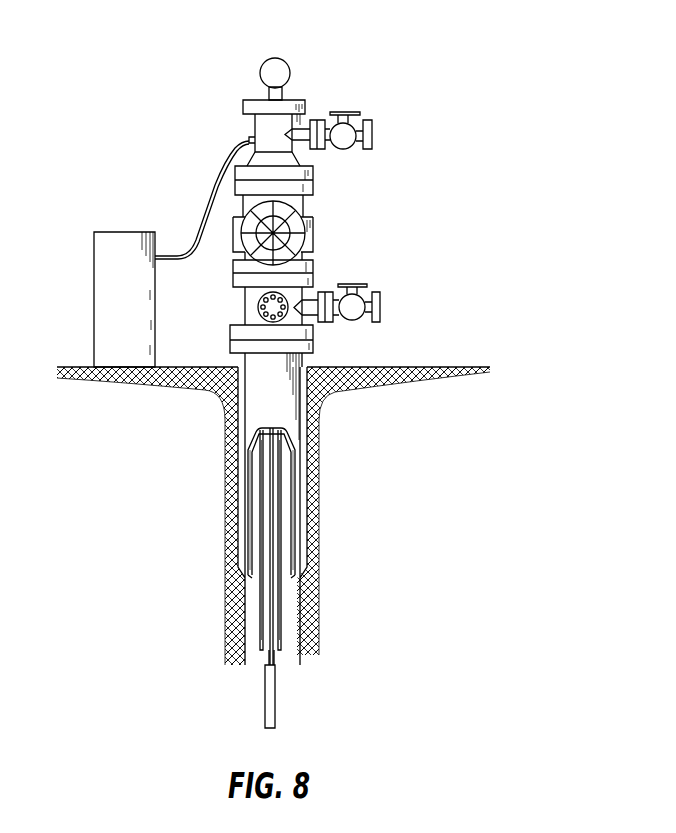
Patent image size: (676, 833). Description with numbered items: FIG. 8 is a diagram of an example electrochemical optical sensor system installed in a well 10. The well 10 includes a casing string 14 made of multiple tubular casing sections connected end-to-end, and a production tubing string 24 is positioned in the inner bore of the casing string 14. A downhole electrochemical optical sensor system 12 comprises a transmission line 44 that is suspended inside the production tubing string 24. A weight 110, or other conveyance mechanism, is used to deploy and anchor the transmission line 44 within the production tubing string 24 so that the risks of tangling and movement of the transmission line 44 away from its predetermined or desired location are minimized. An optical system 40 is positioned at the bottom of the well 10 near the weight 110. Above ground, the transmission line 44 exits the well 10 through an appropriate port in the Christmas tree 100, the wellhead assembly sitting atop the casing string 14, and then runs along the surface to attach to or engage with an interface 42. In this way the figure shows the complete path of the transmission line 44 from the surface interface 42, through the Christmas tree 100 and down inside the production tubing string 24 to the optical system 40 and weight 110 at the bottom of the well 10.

The well 10 is at (317, 43).
The downhole electrochemical optical sensor system 12 is at (151, 144).
The casing string 14 is at (300, 398).
The production tubing string 24 is at (280, 618).
The optical system 40 is at (268, 658).
The interface 42 is at (94, 307).
The transmission line 44 is at (198, 208).
The Christmas tree 100 is at (407, 55).
The weight 110 is at (275, 695).